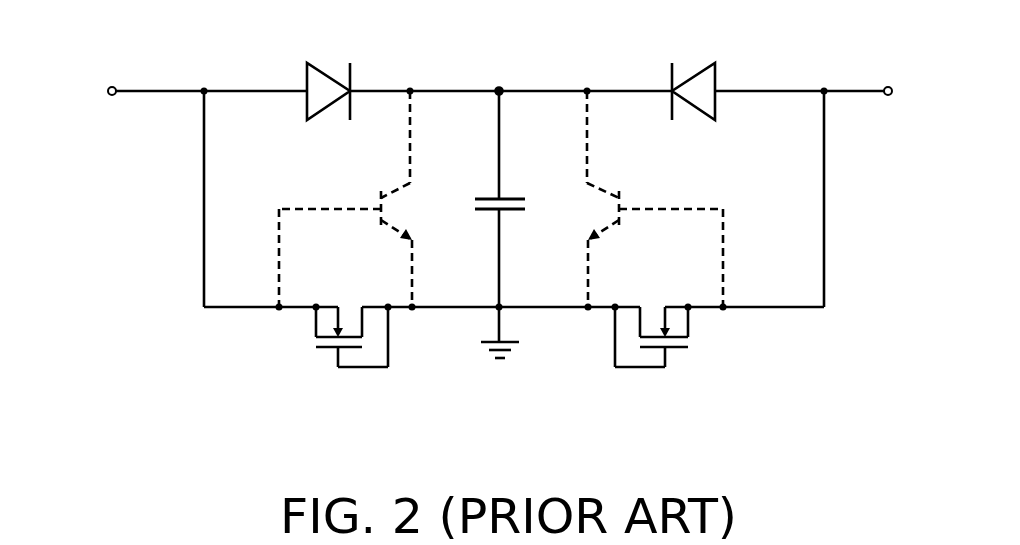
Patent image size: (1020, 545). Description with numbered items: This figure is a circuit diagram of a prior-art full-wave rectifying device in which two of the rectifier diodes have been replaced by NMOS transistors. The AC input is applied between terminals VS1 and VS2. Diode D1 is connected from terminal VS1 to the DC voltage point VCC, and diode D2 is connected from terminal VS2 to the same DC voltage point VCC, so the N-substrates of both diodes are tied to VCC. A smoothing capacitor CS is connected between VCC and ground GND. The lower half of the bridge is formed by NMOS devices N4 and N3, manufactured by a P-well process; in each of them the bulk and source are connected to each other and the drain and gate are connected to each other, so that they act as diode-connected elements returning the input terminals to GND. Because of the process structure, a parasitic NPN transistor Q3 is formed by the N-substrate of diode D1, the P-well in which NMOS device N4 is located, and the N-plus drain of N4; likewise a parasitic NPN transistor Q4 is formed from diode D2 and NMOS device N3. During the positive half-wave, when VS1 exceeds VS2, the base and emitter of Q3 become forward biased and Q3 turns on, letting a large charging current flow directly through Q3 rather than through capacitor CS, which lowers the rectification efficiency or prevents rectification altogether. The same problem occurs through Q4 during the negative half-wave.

The diode D1 is at (331, 69).
The diode D2 is at (692, 69).
The parasitic NPN transistor Q3 is at (370, 199).
The parasitic NPN transistor Q4 is at (634, 199).
The NMOS device N3 is at (668, 355).
The NMOS device N4 is at (337, 355).
The capacitor CS is at (491, 199).
The AC voltage terminal VS1 is at (85, 94).
The AC voltage terminal VS2 is at (916, 94).
The DC voltage point VCC is at (499, 71).
The ground GND is at (500, 355).